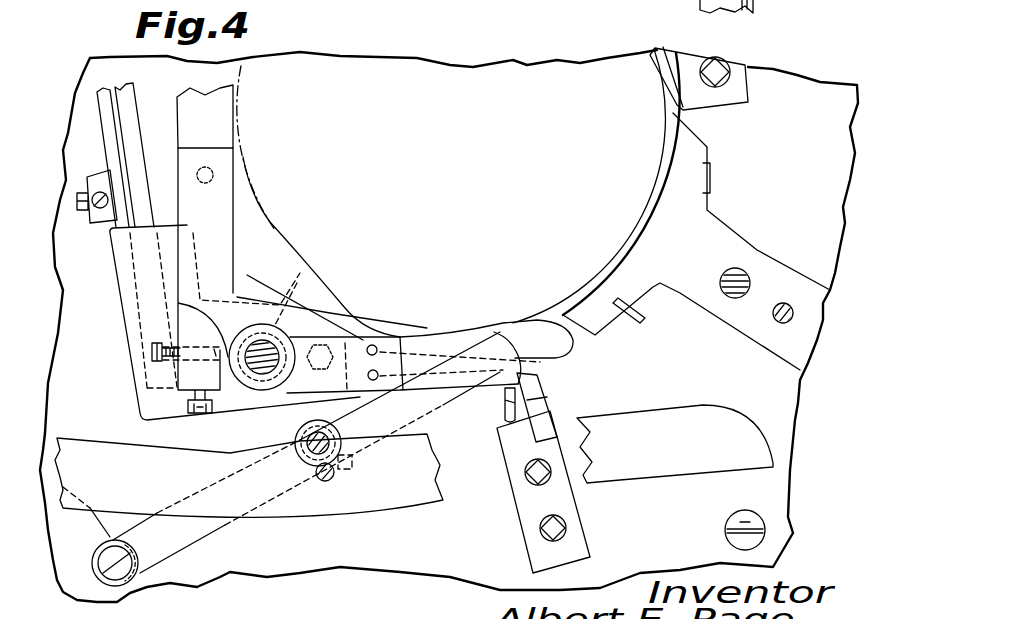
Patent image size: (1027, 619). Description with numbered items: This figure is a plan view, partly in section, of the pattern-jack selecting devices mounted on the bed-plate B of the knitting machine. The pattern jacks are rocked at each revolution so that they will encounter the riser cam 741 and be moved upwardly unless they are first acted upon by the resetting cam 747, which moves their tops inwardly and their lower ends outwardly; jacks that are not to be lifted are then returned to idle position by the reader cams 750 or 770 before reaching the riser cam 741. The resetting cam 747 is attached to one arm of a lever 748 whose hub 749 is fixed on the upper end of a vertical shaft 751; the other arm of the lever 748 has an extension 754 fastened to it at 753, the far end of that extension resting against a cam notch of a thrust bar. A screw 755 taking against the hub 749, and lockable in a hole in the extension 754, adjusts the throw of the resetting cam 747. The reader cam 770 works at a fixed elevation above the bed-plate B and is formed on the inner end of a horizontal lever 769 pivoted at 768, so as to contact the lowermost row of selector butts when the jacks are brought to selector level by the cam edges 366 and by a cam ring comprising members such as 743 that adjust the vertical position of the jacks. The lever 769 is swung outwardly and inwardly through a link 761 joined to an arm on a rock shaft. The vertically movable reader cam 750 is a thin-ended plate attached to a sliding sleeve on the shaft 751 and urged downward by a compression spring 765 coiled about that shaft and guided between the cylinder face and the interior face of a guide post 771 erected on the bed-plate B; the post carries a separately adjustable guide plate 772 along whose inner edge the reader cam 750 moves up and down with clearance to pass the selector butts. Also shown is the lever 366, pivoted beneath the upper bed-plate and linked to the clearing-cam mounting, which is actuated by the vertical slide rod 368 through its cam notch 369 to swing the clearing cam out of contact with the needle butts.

The riser cam 741 is at (648, 212).
The cam ring member 743 is at (665, 67).
The resetting cam 747 is at (480, 327).
The lever 748 is at (297, 340).
The hub 749 is at (268, 336).
The reader cam 750 is at (237, 402).
The vertical shaft 751 is at (297, 340).
The fastening 753 is at (213, 173).
The extension 754 is at (223, 128).
The screw 755 is at (152, 352).
The link 761 is at (83, 547).
The compression spring 765 is at (303, 258).
The pivot 768 is at (313, 445).
The horizontal lever 769 is at (187, 547).
The reader cam 770 is at (507, 323).
The guide post 771 is at (500, 445).
The guide plate 772 is at (517, 400).
The lever 366 is at (700, 468).
The vertical slide rod 368 is at (738, 540).
The cam notch 369 is at (745, 522).
The bed-plate B is at (410, 560).